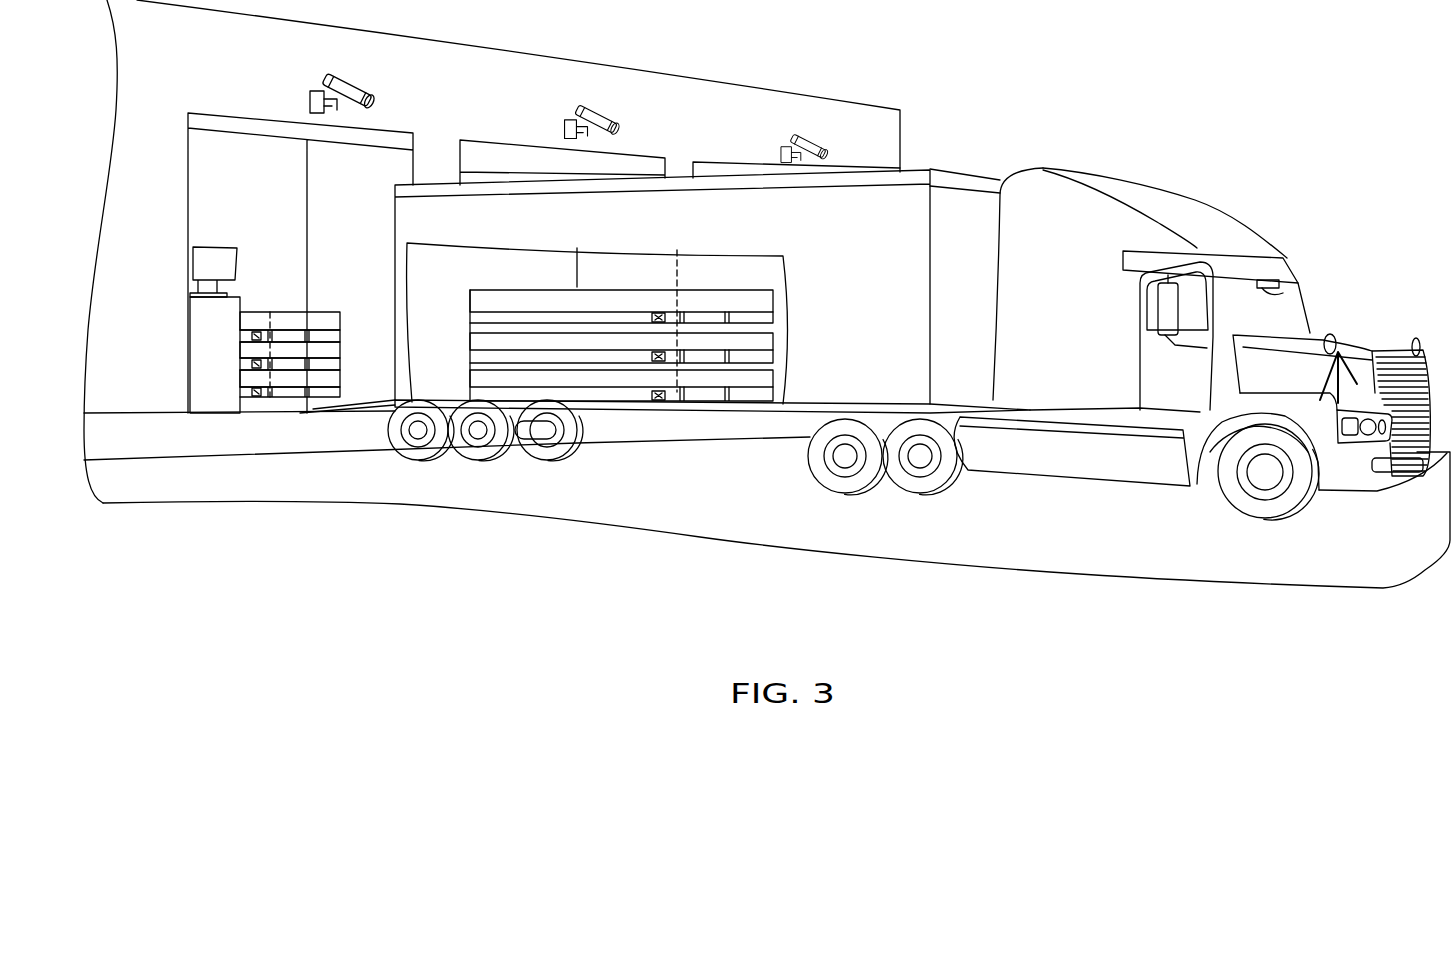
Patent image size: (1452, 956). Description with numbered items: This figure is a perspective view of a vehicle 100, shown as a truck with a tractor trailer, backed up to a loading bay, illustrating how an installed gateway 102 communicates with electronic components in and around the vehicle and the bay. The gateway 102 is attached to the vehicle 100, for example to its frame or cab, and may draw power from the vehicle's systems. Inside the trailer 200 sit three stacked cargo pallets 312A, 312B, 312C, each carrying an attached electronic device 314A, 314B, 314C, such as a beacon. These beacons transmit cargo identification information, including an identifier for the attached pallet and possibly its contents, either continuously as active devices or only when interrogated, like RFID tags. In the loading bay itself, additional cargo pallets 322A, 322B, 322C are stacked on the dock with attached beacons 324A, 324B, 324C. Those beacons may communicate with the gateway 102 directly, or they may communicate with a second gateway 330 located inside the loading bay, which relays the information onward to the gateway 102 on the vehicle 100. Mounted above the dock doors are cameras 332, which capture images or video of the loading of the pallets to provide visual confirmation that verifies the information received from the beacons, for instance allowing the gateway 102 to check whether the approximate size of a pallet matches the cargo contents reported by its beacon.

The vehicle 100 is at (1190, 198).
The gateway 102 is at (1287, 297).
The trailer 200 is at (972, 173).
The cargo pallet 312A is at (480, 297).
The cargo pallet 312B is at (480, 330).
The cargo pallet 312C is at (480, 368).
The electronic device 314A is at (660, 313).
The electronic device 314B is at (667, 356).
The electronic device 314C is at (668, 395).
The cargo pallet 322A is at (307, 322).
The cargo pallet 322B is at (292, 348).
The cargo pallet 322C is at (295, 382).
The beacon 324A is at (242, 334).
The beacon 324B is at (242, 364).
The beacon 324C is at (242, 392).
The second gateway 330 is at (197, 265).
The camera 332 is at (353, 90).